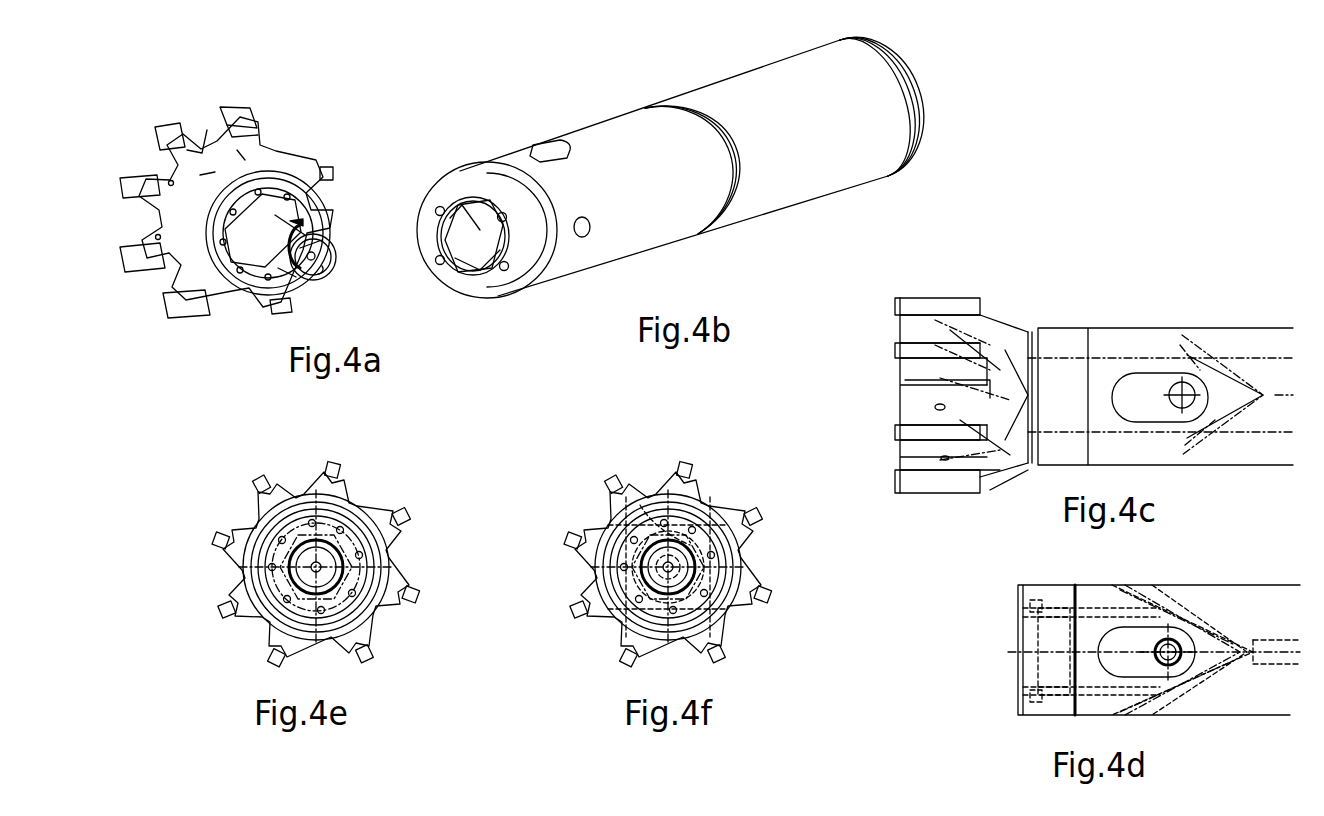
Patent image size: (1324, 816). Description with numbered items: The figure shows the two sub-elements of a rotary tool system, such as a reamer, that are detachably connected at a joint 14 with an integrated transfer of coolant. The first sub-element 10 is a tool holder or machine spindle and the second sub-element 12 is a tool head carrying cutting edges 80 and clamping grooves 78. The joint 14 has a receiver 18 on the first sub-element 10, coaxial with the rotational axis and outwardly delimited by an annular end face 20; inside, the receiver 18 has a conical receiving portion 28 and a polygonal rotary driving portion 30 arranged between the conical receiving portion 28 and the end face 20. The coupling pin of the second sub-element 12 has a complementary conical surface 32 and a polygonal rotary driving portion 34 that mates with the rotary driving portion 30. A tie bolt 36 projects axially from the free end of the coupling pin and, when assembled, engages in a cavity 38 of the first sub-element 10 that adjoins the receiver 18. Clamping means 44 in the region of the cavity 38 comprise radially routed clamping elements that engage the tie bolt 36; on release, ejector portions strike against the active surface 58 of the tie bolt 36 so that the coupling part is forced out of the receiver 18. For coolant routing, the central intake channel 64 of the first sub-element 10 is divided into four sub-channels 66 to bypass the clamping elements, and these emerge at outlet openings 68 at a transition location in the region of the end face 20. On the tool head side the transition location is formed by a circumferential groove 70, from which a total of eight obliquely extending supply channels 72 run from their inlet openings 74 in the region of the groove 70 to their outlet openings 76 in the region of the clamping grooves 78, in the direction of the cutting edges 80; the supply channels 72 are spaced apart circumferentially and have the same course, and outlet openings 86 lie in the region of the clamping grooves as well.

In FIG. 4B, the first sub-element 10 is at (631, 135).
In FIG. 4C, the first sub-element 10 is at (1113, 342).
In FIG. 4D, the first sub-element 10 is at (1201, 575).
In FIG. 4A, the second sub-element 12 is at (300, 144).
In FIG. 4C, the second sub-element 12 is at (1005, 280).
In FIG. 4E, the second sub-element 12 is at (400, 505).
In FIG. 4F, the second sub-element 12 is at (608, 505).
In FIG. 4A, the joint 14 is at (324, 307).
In FIG. 4B, the joint 14 is at (417, 278).
In FIG. 4C, the joint 14 is at (1048, 318).
In FIG. 4B, the receiver 18 is at (466, 210).
In FIG. 4D, the receiver 18 is at (1048, 640).
In FIG. 4B, the annular end face 20 is at (490, 195).
In FIG. 4B, the conical receiving portion 28 is at (466, 252).
In FIG. 4D, the conical receiving portion 28 is at (1048, 640).
In FIG. 4B, the rotary driving portion 30 is at (440, 212).
In FIG. 4A, the conical surface 32 is at (282, 197).
In FIG. 4A, the polygonal rotary driving portion 34 is at (253, 208).
In FIG. 4E, the polygonal rotary driving portion 34 is at (335, 540).
In FIG. 4A, the tie bolt 36 is at (305, 242).
In FIG. 4E, the tie bolt 36 is at (290, 548).
In FIG. 4B, the cavity 38 is at (494, 238).
In FIG. 4B, the clamping means 44 is at (538, 148).
In FIG. 4C, the clamping means 44 is at (1146, 393).
In FIG. 4D, the clamping means 44 is at (1150, 632).
In FIG. 4A, the active surface 58 is at (315, 274).
In FIG. 4C, the intake channel 64 is at (1290, 395).
In FIG. 4D, the intake channel 64 is at (1280, 650).
In FIG. 4C, the sub-channels 66 is at (1215, 345).
In FIG. 4D, the sub-channels 66 is at (1218, 600).
In FIG. 4B, the outlet openings 68 is at (507, 222).
In FIG. 4D, the outlet openings 68 is at (1020, 612).
In FIG. 4A, the circumferential groove 70 is at (233, 260).
In FIG. 4E, the circumferential groove 70 is at (283, 560).
In FIG. 4A, the supply channels 72 is at (305, 222).
In FIG. 4C, the supply channels 72 is at (1012, 330).
In FIG. 4F, the supply channels 72 is at (715, 520).
In FIG. 4E, the inlet openings 74 is at (355, 596).
In FIG. 4F, the inlet openings 74 is at (720, 610).
In FIG. 4A, the outlet openings 76 is at (213, 140).
In FIG. 4C, the outlet openings 76 is at (935, 407).
In FIG. 4F, the outlet openings 76 is at (650, 500).
In FIG. 4A, the clamping grooves 78 is at (237, 150).
In FIG. 4C, the clamping grooves 78 is at (920, 418).
In FIG. 4F, the clamping grooves 78 is at (640, 500).
In FIG. 4A, the cutting edges 80 is at (333, 172).
In FIG. 4C, the cutting edges 80 is at (932, 298).
In FIG. 4F, the cutting edges 80 is at (685, 490).
In FIG. 4A, the outlet openings 86 is at (243, 112).